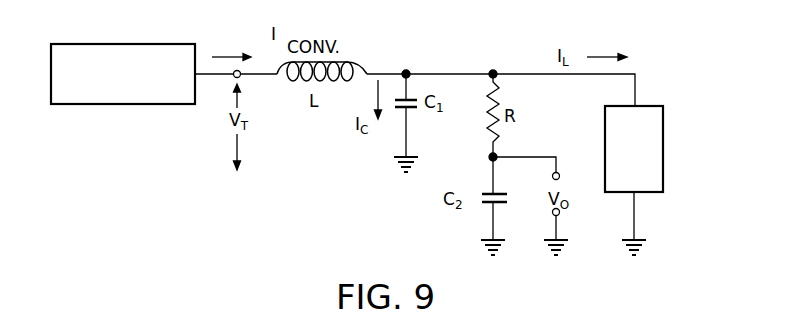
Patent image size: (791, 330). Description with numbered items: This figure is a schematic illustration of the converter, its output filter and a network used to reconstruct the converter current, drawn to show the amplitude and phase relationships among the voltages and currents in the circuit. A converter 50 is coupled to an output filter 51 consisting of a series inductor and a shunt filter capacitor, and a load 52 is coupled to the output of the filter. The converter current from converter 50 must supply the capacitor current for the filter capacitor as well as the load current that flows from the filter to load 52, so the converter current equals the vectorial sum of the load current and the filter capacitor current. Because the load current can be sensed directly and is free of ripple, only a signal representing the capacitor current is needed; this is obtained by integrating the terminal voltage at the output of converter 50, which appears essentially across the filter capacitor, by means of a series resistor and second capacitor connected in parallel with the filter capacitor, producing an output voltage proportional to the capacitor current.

The converter 50 is at (125, 44).
The output filter 51 is at (375, 56).
The load 52 is at (663, 142).